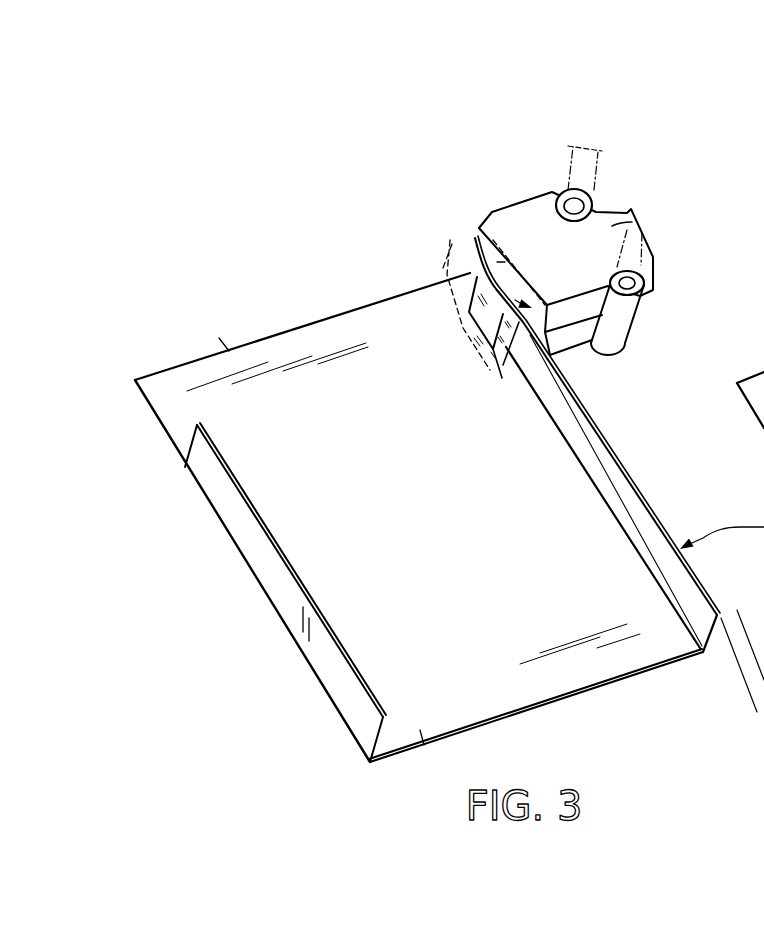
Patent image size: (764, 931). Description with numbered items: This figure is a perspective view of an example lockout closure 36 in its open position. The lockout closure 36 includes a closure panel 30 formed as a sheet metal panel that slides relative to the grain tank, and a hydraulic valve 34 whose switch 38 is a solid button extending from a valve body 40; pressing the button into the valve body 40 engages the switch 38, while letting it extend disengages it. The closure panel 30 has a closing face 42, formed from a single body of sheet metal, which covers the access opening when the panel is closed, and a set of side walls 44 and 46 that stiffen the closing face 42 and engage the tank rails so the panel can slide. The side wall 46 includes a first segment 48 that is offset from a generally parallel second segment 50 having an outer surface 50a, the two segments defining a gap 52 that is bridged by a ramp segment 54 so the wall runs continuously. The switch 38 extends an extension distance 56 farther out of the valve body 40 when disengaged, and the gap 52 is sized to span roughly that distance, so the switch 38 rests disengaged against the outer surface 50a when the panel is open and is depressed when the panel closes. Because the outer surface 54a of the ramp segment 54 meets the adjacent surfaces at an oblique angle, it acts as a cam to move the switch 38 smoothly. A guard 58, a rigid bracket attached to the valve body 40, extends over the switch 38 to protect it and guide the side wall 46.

The closure panel 30 is at (287, 315).
The hydraulic valve 34 is at (527, 180).
The lockout closure 36 is at (436, 174).
The switch 38 is at (472, 242).
The valve body 40 is at (612, 226).
The closing face 42 is at (460, 549).
The side wall 44 is at (243, 530).
The side wall 46 is at (608, 477).
The first segment 48 is at (595, 420).
The second segment 50 is at (473, 315).
The outer surface 50a is at (508, 290).
The gap 52 is at (502, 262).
The ramp segment 54 is at (504, 347).
The outer surface 54a is at (524, 254).
The extension distance 56 is at (738, 689).
The guard 58 is at (472, 275).